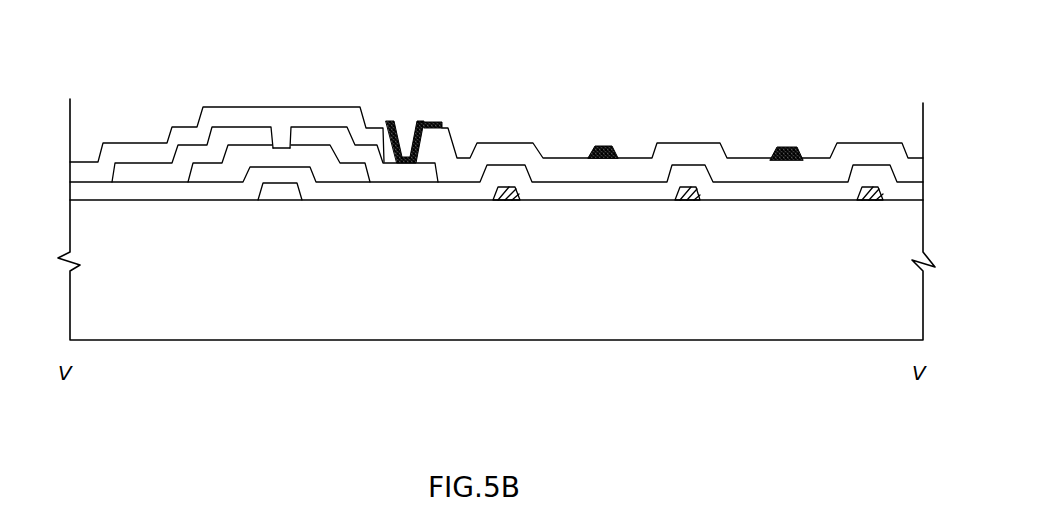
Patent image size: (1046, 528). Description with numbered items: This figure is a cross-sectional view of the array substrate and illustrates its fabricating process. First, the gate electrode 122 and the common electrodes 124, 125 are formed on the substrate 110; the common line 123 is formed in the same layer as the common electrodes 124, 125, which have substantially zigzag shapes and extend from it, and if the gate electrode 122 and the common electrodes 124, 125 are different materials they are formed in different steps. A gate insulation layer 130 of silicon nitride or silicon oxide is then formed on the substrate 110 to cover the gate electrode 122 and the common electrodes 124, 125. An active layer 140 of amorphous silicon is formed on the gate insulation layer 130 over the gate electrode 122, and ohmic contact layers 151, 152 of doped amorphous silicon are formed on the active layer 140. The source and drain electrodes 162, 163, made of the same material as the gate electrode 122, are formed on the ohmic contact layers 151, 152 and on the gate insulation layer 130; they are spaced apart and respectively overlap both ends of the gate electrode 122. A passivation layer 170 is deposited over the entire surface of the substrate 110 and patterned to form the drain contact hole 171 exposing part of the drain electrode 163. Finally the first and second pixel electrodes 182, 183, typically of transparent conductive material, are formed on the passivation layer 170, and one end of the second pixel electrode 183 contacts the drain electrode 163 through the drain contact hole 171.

The substrate 110 is at (584, 325).
The gate electrode 122 is at (278, 192).
The common line 123 is at (507, 203).
The common electrode 124 is at (871, 203).
The common electrode 125 is at (690, 203).
The gate insulation layer 130 is at (408, 188).
The active layer 140 is at (279, 158).
The ohmic contact layer 151 is at (197, 165).
The ohmic contact layer 152 is at (304, 150).
The source electrode 162 is at (238, 133).
The drain electrode 163 is at (333, 133).
The passivation layer 170 is at (125, 152).
The drain contact hole 171 is at (404, 110).
The first pixel electrode 182 is at (786, 147).
The second pixel electrode 183 is at (437, 112).